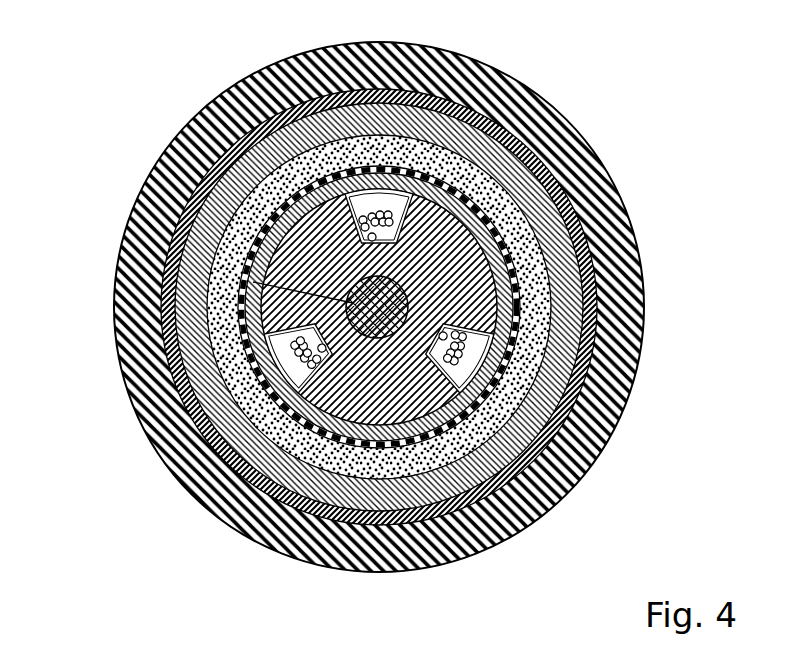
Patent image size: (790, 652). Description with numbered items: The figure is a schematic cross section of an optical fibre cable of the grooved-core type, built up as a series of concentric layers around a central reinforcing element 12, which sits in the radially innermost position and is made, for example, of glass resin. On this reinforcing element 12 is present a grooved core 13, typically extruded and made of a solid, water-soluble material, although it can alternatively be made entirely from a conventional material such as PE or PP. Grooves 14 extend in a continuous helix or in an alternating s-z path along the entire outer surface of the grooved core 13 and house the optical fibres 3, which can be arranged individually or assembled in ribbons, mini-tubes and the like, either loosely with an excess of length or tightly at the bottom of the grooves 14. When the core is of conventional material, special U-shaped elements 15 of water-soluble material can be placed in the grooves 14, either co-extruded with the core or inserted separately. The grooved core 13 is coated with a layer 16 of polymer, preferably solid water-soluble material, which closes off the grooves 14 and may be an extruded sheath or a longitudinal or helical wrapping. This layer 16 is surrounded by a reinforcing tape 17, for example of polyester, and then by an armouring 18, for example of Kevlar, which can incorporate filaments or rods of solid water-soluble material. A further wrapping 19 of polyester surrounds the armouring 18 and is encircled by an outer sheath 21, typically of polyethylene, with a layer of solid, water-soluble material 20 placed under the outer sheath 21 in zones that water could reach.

The optical fibres 3 is at (390, 72).
The reinforcing element 12 is at (172, 145).
The grooved core 13 is at (552, 168).
The grooves 14 is at (460, 372).
The U-shaped elements 15 is at (520, 328).
The layer of polymer 16 is at (540, 508).
The reinforcing tape 17 is at (408, 528).
The armouring 18 is at (303, 518).
The wrapping 19 is at (262, 508).
The layer of solid, water-soluble material 20 is at (195, 428).
The outer sheath 21 is at (120, 357).